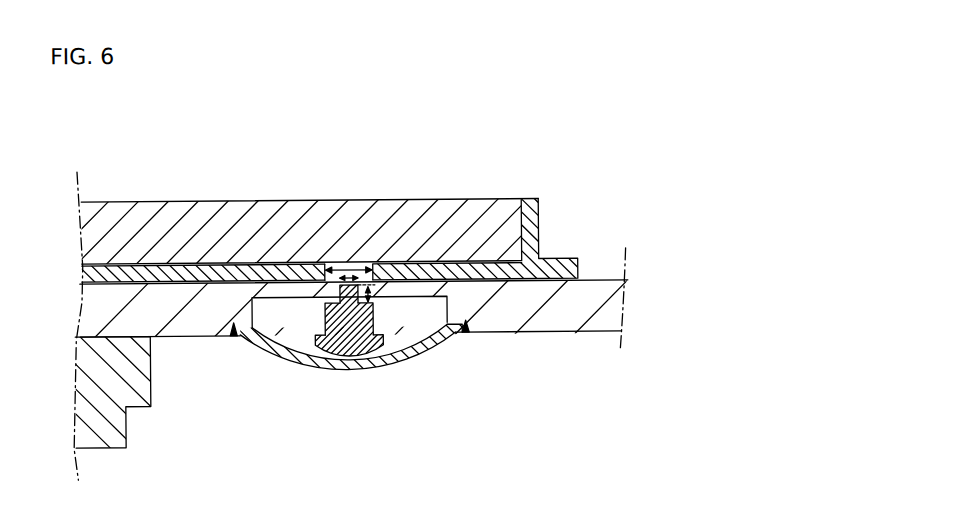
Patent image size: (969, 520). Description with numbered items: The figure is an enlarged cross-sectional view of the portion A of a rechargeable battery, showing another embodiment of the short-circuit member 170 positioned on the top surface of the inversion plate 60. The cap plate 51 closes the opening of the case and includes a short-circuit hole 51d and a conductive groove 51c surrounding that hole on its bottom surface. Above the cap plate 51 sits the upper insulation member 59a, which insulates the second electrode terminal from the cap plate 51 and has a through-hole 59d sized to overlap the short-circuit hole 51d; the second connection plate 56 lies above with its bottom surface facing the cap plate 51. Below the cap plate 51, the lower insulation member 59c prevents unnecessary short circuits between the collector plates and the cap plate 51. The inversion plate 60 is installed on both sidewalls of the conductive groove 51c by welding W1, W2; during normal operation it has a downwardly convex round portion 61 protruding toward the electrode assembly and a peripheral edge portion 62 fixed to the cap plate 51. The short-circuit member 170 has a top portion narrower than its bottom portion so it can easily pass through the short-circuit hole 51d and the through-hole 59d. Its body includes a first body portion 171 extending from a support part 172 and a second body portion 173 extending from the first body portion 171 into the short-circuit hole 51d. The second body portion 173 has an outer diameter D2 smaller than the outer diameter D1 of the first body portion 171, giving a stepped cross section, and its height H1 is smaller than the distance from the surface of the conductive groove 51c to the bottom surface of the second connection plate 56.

The cap plate 51 is at (354, 275).
The conductive groove 51c is at (250, 296).
The short-circuit hole 51d is at (322, 277).
The second connection plate 56 is at (135, 200).
The upper insulation member 59a is at (531, 200).
The lower insulation member 59c is at (150, 383).
The through-hole 59d is at (376, 266).
The inversion plate 60 is at (354, 397).
The round portion 61 is at (380, 364).
The peripheral edge portion 62 is at (457, 334).
The short-circuit member 170 is at (302, 383).
The first body portion 171 is at (318, 334).
The support part 172 is at (324, 356).
The second body portion 173 is at (324, 304).
The welding W1 is at (232, 337).
The welding W2 is at (467, 335).
The outer diameter of the first body portion D1 is at (346, 267).
The outer diameter of the second body portion D2 is at (352, 275).
The height of the second body portion H1 is at (373, 287).
The portion A is at (488, 146).